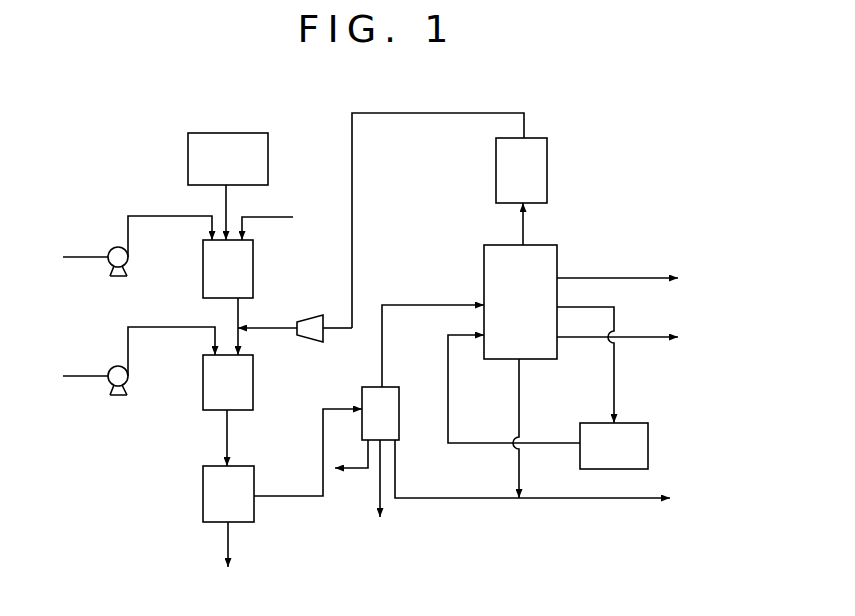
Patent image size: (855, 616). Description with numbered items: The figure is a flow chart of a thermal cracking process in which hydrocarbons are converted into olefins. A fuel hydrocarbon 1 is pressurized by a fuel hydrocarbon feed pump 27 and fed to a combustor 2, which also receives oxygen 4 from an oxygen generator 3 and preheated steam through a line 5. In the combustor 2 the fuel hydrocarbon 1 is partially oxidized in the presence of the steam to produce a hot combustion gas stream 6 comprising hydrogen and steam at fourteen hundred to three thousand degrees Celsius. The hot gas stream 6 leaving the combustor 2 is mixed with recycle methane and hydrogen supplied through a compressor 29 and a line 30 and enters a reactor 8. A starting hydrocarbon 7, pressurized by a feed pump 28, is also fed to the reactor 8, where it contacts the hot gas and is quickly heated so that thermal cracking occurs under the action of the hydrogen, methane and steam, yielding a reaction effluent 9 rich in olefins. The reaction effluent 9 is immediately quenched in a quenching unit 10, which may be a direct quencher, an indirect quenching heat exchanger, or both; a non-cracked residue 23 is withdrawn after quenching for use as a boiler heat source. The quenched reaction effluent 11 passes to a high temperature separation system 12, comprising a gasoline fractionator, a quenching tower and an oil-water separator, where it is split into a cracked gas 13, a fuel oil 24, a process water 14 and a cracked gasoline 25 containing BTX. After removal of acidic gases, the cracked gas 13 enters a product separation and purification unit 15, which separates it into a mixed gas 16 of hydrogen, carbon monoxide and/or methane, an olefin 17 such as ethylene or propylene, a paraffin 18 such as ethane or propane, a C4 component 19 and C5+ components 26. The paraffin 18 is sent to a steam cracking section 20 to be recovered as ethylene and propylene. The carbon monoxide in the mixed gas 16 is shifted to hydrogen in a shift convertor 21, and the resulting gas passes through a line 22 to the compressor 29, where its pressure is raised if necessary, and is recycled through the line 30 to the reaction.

The fuel hydrocarbon 1 is at (85, 247).
The combustor 2 is at (228, 269).
The oxygen generator 3 is at (228, 159).
The oxygen 4 is at (234, 212).
The line 5 is at (267, 217).
The combustion gas stream 6 is at (245, 326).
The starting hydrocarbon 7 is at (85, 363).
The reactor 8 is at (228, 382).
The reaction effluent 9 is at (235, 438).
The quenching unit 10 is at (228, 494).
The reaction effluent 11 is at (308, 440).
The high temperature separation system 12 is at (380, 413).
The cracked gas 13 is at (432, 346).
The process water 14 is at (348, 454).
The product separation and purification unit 15 is at (520, 302).
The mixed gas 16 is at (536, 224).
The olefin 17 is at (632, 280).
The paraffin 18 is at (598, 365).
The C4 component 19 is at (632, 339).
The steam cracking section 20 is at (614, 446).
The shift convertor 21 is at (521, 170).
The line 22 is at (438, 209).
The non-cracked residue 23 is at (232, 559).
The fuel oil 24 is at (385, 492).
The cracked gasoline 25 is at (547, 476).
The C5+ components 26 is at (514, 416).
The fuel hydrocarbon feed pump 27 is at (158, 258).
The feed pump 28 is at (161, 373).
The compressor 29 is at (324, 340).
The line 30 is at (267, 315).